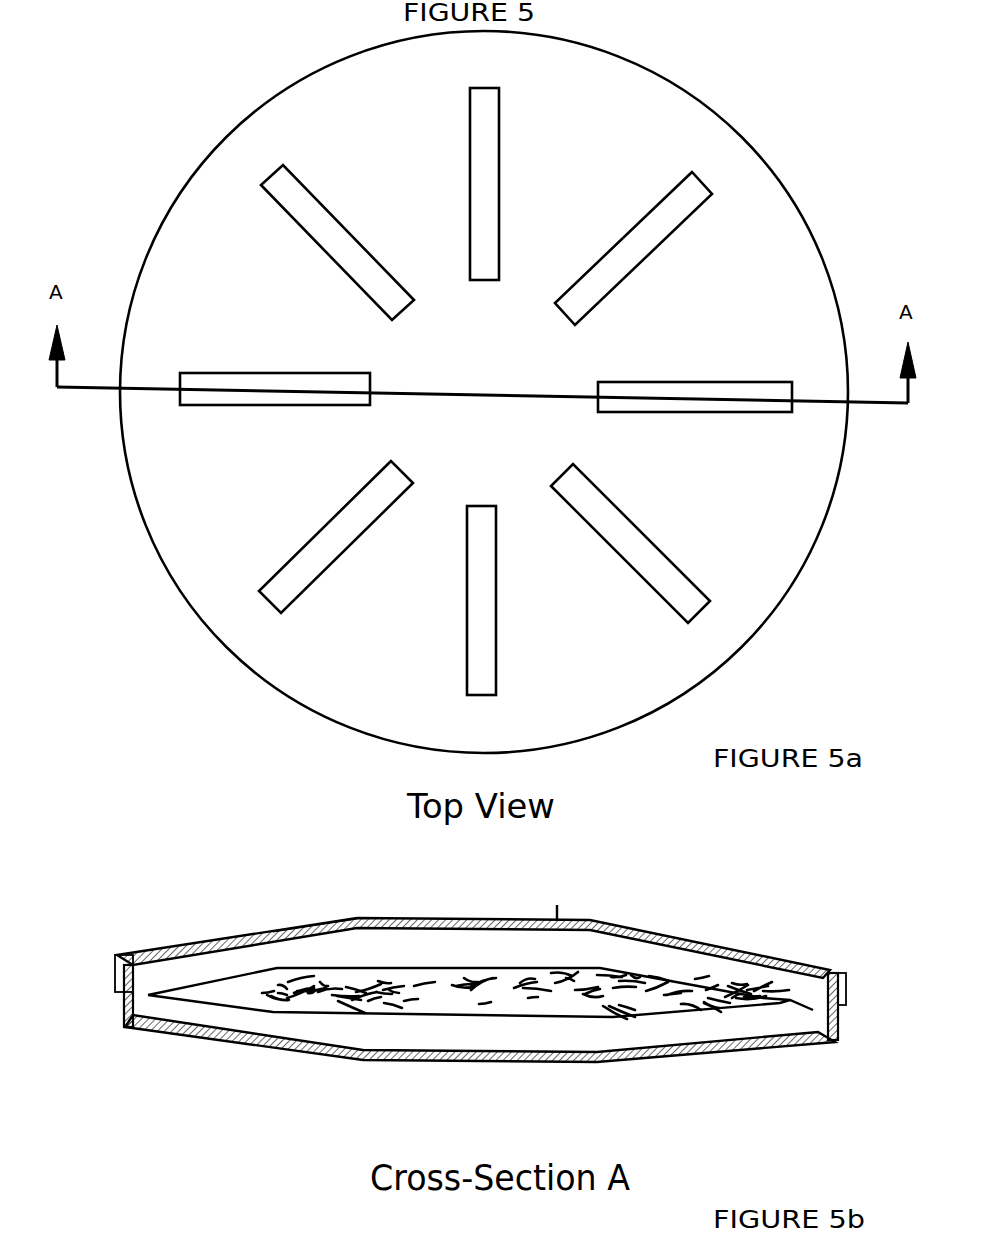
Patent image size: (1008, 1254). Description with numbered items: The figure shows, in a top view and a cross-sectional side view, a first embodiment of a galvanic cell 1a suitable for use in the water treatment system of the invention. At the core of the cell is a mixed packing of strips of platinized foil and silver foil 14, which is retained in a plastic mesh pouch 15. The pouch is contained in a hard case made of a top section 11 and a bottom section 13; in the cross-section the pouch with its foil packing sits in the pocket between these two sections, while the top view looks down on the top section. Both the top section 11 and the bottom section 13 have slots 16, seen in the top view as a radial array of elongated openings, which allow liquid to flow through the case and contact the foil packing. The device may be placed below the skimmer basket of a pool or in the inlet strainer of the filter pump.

In FIG. 5, the galvanic cell 1a is at (633, 124).
In FIG. 5B, the galvanic cell 1a is at (558, 921).
In FIG. 5B, the top section 11 is at (370, 916).
In FIG. 5B, the bottom section 13 is at (410, 1060).
In FIG. 5B, the mixed packing of strips of platinized foil and silver foil 14 is at (597, 968).
In FIG. 5B, the plastic mesh pouch 15 is at (790, 1003).
In FIG. 5, the slots 16 is at (367, 505).
In FIG. 5B, the slots 16 is at (273, 932).